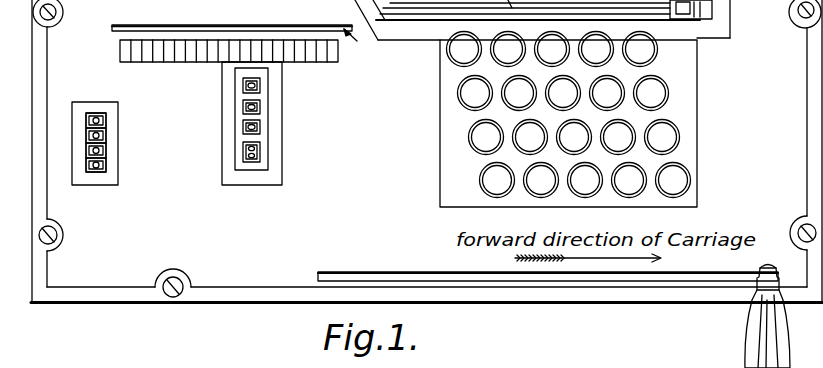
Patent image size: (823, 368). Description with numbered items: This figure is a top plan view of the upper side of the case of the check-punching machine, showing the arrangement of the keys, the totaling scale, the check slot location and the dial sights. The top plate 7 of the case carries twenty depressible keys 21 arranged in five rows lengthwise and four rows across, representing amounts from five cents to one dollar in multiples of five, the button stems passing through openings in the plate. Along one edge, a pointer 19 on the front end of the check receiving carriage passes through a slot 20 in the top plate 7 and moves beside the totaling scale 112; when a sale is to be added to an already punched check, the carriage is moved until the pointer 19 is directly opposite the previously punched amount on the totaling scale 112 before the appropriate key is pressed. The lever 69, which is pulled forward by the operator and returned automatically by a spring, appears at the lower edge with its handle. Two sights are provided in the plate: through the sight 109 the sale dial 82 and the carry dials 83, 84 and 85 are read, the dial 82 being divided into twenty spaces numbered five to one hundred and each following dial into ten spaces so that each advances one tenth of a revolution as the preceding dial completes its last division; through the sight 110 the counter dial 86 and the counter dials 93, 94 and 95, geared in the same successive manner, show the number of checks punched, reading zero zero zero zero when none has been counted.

The top plate 7 is at (542, 123).
The pointer 19 is at (357, 41).
The slot 20 is at (279, 11).
The depressible keys 21 is at (603, 56).
The lever 69 is at (697, 278).
The dial 82 is at (261, 152).
The dial 83 is at (261, 127).
The dial 84 is at (261, 107).
The dial 85 is at (261, 85).
The counter dial 86 is at (104, 165).
The counter dial 93 is at (105, 152).
The counter dial 94 is at (104, 141).
The counter dial 95 is at (105, 125).
The sight 109 is at (242, 167).
The sight 110 is at (88, 168).
The totaling scale 112 is at (171, 64).